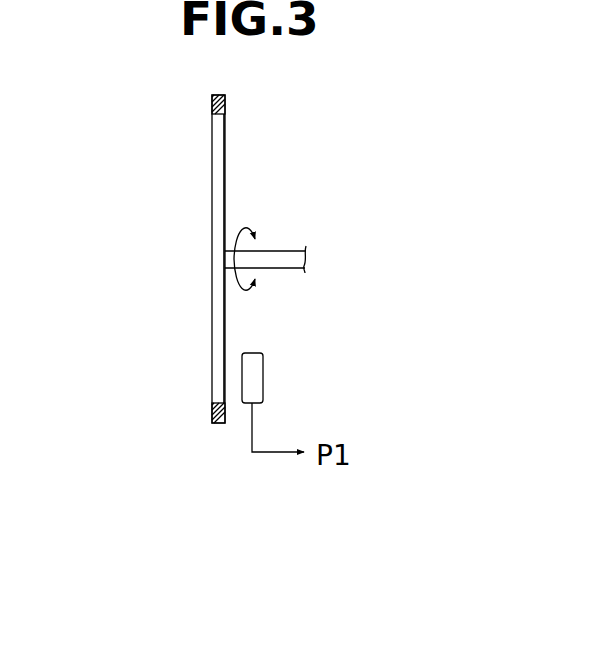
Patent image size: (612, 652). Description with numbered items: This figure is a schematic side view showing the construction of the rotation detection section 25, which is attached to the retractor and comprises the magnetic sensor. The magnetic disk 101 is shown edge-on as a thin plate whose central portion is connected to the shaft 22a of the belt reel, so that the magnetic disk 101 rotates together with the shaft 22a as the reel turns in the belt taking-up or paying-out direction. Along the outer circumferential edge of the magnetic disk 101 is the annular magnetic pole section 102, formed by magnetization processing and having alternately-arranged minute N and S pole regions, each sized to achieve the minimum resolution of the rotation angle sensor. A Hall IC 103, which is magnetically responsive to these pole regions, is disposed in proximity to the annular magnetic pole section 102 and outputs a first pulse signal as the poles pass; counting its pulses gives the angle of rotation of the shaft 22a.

The rotation detection section 25 is at (262, 137).
The magnetic disk 101 is at (212, 197).
The annular magnetic pole section 102 is at (212, 106).
The shaft 22a is at (277, 251).
The Hall IC 103 is at (262, 372).